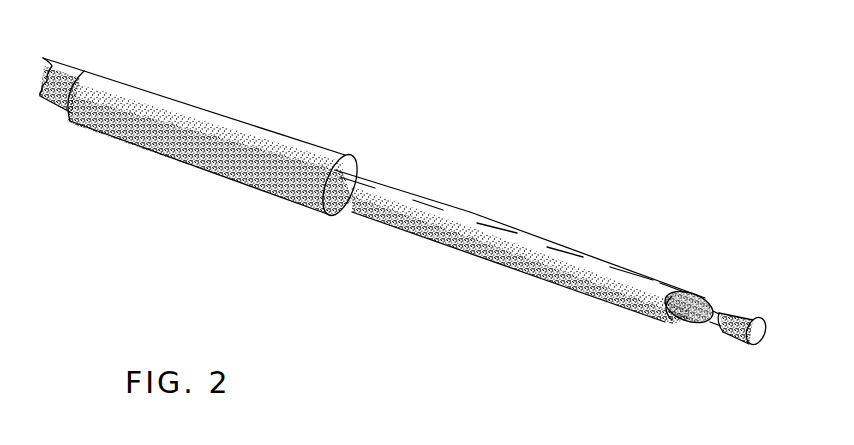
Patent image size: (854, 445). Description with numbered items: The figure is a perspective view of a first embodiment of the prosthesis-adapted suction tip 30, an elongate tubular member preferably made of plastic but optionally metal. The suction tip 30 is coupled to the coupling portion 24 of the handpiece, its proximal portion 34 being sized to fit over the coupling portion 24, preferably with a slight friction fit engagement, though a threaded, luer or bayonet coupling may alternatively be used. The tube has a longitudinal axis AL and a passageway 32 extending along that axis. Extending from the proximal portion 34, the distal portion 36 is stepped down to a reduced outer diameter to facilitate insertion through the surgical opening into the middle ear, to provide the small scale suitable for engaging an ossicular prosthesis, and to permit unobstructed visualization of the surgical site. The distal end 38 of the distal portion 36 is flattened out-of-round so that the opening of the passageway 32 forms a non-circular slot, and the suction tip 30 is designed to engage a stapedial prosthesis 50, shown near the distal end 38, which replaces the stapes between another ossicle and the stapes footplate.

The coupling portion 24 is at (62, 56).
The suction tip 30 is at (340, 83).
The passageway 32 is at (577, 258).
The proximal portion 34 is at (226, 117).
The distal portion 36 is at (457, 207).
The distal end 38 is at (685, 292).
The stapedial prosthesis 50 is at (745, 308).
The longitudinal axis AL is at (518, 238).